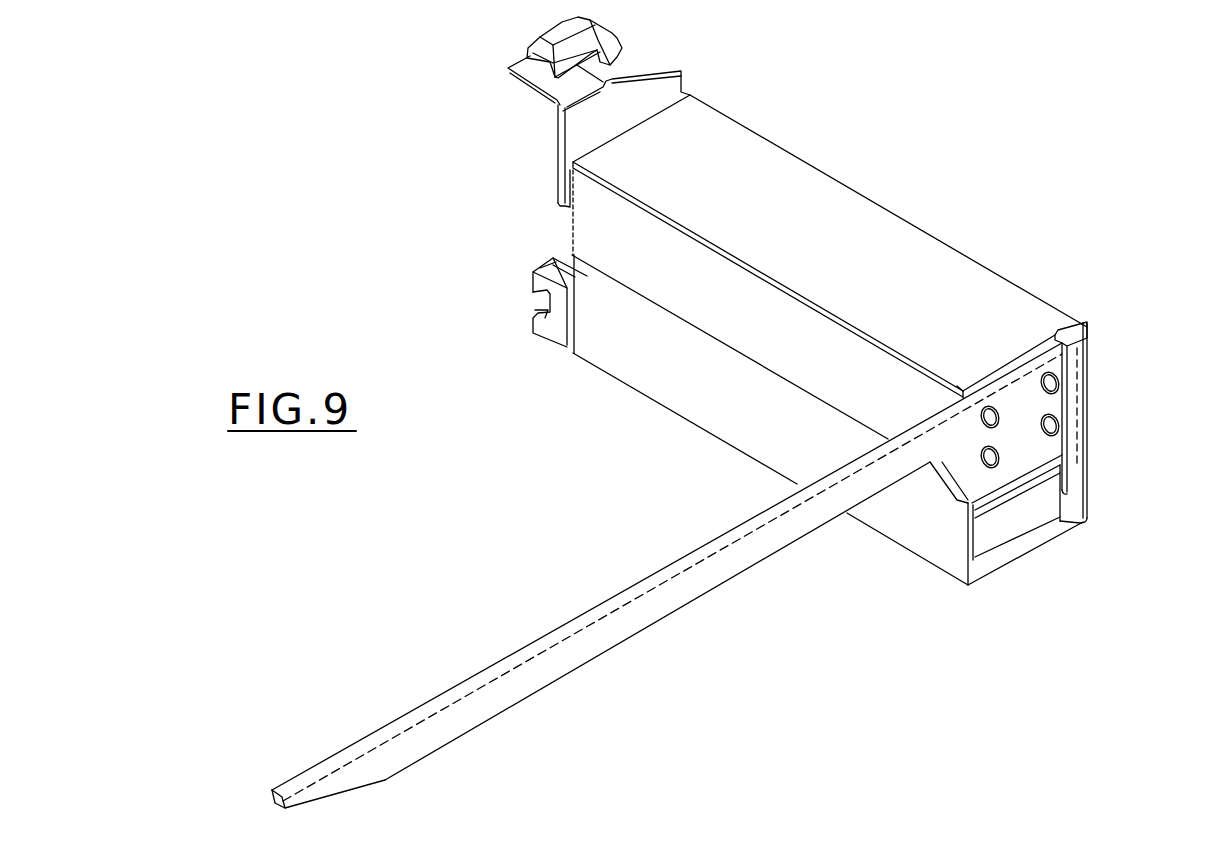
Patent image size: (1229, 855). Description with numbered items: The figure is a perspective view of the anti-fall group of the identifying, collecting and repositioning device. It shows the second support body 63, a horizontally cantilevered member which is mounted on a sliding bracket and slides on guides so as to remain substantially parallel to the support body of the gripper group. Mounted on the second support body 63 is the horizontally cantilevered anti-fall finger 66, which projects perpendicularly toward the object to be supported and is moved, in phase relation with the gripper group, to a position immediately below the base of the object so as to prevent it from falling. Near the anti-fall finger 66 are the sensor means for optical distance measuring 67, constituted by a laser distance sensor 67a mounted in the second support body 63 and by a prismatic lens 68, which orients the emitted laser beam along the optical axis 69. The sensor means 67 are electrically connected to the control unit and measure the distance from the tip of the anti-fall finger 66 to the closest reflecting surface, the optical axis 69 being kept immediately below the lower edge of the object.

The second support body 63 is at (906, 191).
The anti-fall finger 66 is at (782, 575).
The sensor means for optical distance measuring 67 is at (1112, 435).
The laser distance sensor 67a is at (1030, 512).
The prismatic lens 68 is at (1080, 382).
The optical axis 69 is at (268, 805).